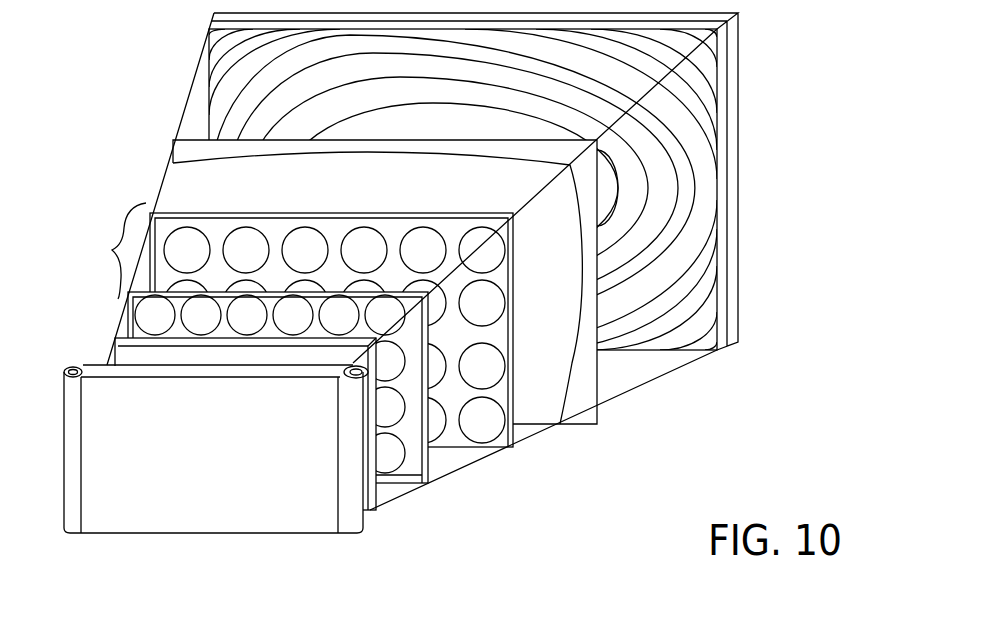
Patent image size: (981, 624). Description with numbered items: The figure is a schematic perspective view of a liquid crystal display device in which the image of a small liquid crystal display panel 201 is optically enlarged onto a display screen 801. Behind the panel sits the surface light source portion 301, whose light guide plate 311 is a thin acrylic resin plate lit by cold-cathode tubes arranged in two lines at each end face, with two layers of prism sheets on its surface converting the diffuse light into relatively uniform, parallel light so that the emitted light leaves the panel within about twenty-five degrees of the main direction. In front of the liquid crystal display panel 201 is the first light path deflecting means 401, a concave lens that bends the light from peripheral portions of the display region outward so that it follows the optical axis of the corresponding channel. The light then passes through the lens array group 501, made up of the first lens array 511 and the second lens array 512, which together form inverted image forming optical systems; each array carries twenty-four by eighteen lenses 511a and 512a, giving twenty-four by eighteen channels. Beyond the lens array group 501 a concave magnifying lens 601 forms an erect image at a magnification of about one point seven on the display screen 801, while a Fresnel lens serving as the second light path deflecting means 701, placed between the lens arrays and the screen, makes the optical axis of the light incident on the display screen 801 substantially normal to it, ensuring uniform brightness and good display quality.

The liquid crystal display panel 201 is at (126, 357).
The surface light source portion 301 is at (216, 494).
The light guide plate 311 is at (263, 520).
The first light path deflecting means 401 is at (378, 497).
The lens array group 501 is at (105, 251).
The first lens array 511 is at (276, 394).
The lens of first lens array 511a is at (150, 316).
The second lens array 512 is at (360, 296).
The lens of second lens array 512a is at (187, 226).
The magnifying lens 601 is at (588, 387).
The second light path deflecting means 701 is at (707, 345).
The display screen 801 is at (740, 256).